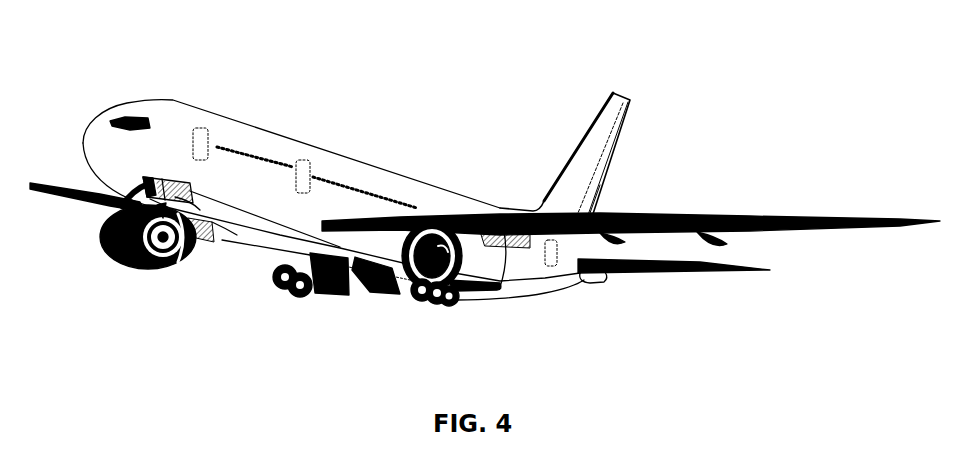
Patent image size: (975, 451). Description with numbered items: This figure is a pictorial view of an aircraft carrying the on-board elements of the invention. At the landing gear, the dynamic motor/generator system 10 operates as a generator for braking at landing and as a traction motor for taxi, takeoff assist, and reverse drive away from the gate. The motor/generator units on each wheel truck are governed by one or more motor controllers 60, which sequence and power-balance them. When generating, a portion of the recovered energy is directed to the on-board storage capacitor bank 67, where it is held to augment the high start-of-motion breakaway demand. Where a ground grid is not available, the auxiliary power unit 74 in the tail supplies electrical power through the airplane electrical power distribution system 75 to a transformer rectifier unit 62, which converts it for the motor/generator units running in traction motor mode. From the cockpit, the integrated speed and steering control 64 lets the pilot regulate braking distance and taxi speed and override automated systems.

The dynamic motor/generator system 10 is at (410, 300).
The motor controller 60 is at (143, 179).
The transformer rectifier unit 62 is at (178, 200).
The integrated speed and steering control 64 is at (160, 192).
The on-board storage capacitor bank 67 is at (201, 228).
The auxiliary power unit 74 is at (599, 279).
The airplane electrical power distribution system 75 is at (258, 221).